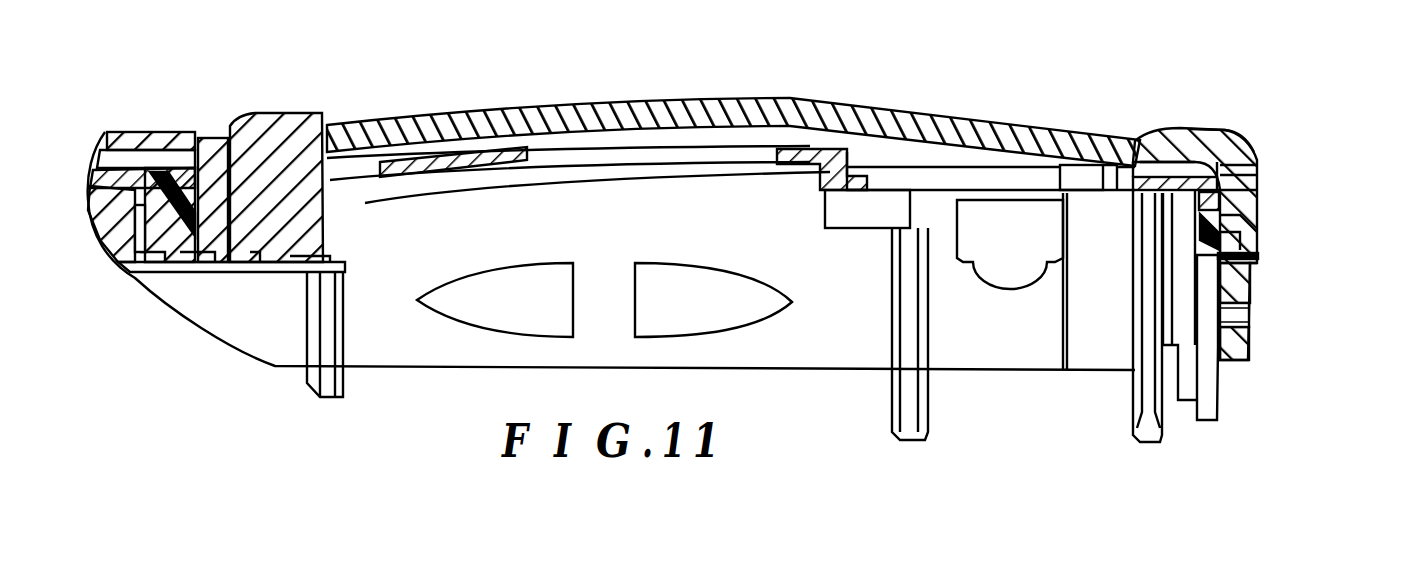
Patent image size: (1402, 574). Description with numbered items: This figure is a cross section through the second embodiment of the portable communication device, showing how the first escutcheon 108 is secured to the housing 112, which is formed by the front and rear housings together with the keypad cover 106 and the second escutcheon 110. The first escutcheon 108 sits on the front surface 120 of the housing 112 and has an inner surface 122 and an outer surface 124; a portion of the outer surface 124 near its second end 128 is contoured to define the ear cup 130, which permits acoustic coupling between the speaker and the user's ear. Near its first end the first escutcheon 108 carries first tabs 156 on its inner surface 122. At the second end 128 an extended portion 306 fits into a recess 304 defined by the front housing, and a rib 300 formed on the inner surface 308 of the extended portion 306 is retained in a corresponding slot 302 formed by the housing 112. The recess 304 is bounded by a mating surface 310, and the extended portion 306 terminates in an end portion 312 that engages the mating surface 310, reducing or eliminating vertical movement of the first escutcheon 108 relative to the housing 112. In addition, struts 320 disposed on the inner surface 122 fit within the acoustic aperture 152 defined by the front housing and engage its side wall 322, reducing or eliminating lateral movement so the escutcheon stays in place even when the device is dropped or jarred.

The keypad cover 106 is at (90, 183).
The first escutcheon 108 is at (1187, 128).
The second escutcheon 110 is at (153, 132).
The housing 112 is at (1248, 350).
The front surface 120 is at (1145, 160).
The inner surface 122 is at (1253, 172).
The outer surface 124 is at (1207, 131).
The second end 128 is at (1260, 168).
The ear cup 130 is at (887, 118).
The acoustic aperture 152 is at (965, 178).
The first tabs 156 is at (185, 250).
The rib 300 is at (1200, 233).
The slot 302 is at (1202, 280).
The recess 304 is at (1258, 192).
The extended portion 306 is at (1253, 222).
The inner surface of the extended portion 308 is at (1258, 256).
The mating surface 310 is at (1249, 305).
The end portion 312 is at (1250, 265).
The struts 320 is at (1073, 177).
The side wall 322 is at (922, 183).